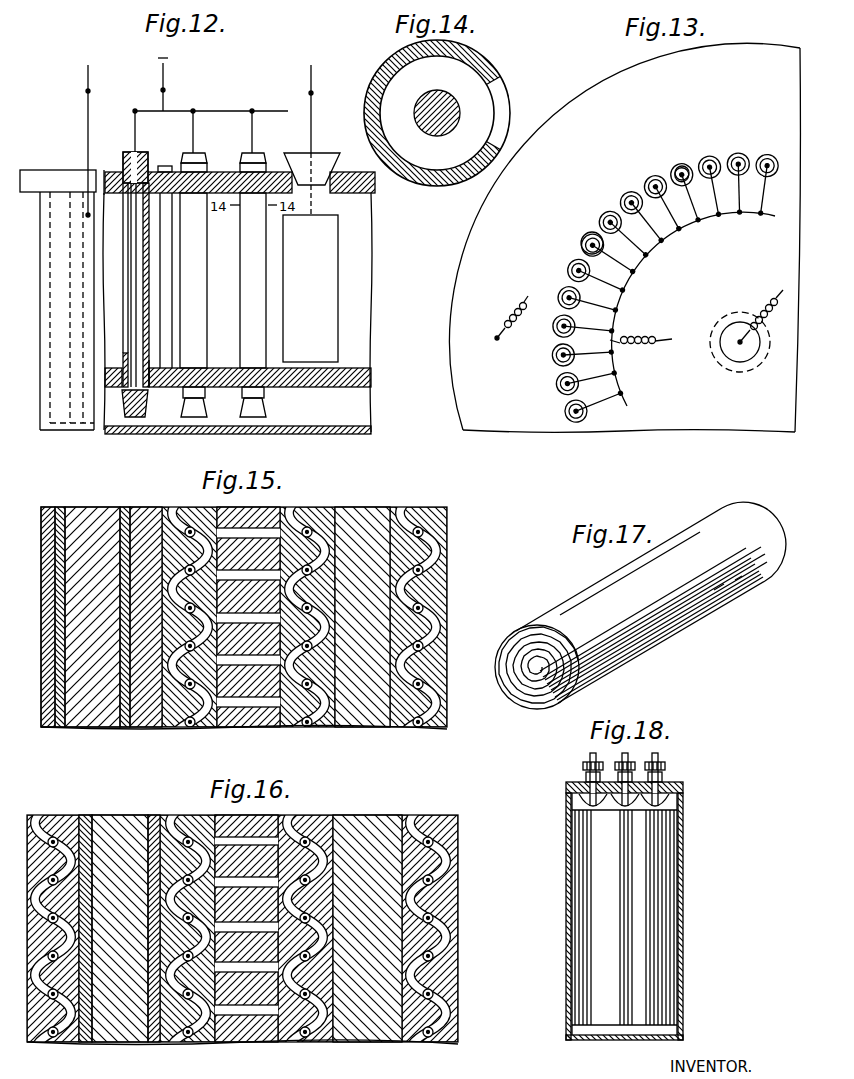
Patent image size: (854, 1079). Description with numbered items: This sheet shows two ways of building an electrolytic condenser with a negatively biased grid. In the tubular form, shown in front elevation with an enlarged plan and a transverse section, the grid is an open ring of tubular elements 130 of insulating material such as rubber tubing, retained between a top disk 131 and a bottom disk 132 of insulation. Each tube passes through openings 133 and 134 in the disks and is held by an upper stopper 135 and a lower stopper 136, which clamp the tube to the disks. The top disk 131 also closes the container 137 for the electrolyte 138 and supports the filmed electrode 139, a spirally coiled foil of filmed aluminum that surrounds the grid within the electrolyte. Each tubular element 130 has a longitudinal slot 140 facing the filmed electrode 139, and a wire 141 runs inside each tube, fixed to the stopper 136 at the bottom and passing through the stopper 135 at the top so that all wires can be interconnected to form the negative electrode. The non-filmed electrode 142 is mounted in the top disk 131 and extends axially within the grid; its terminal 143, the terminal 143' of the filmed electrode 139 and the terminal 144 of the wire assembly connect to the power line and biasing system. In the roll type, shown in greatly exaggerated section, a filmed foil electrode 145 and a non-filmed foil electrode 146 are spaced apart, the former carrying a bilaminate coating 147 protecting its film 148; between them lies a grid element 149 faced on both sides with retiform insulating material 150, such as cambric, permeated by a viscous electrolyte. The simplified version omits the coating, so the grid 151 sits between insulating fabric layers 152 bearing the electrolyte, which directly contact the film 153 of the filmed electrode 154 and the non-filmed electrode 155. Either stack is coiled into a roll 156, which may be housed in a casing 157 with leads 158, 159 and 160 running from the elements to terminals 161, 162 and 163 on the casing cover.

In FIG. 12, the tubular elements 130 is at (247, 296).
In FIG. 14, the tubular elements 130 is at (492, 67).
In FIG. 13, the tubular elements 130 is at (622, 195).
In FIG. 12, the top disk 131 is at (378, 193).
In FIG. 13, the top disk 131 is at (527, 420).
In FIG. 12, the bottom disk 132 is at (372, 380).
In FIG. 12, the openings of top disk 133 is at (105, 183).
In FIG. 13, the openings of top disk 133 is at (684, 165).
In FIG. 12, the openings of bottom disk 134 is at (152, 392).
In FIG. 12, the stopper 135 is at (140, 160).
In FIG. 13, the stopper 135 is at (583, 246).
In FIG. 12, the stopper 136 is at (137, 416).
In FIG. 12, the container 137 is at (350, 425).
In FIG. 12, the electrolyte 138 is at (358, 203).
In FIG. 12, the filmed electrode 139 is at (76, 403).
In FIG. 12, the longitudinal slot 140 is at (122, 303).
In FIG. 14, the longitudinal slot 140 is at (505, 116).
In FIG. 12, the wire 141 is at (135, 262).
In FIG. 14, the wire 141 is at (445, 127).
In FIG. 13, the wire 141 is at (637, 256).
In FIG. 12, the non-filmed electrode 142 is at (333, 312).
In FIG. 13, the non-filmed electrode 142 is at (748, 362).
In FIG. 12, the terminal of non-filmed electrode 143 is at (318, 140).
In FIG. 13, the terminal of non-filmed electrode 143 is at (737, 342).
In FIG. 12, the terminal of filmed electrode 143' is at (110, 141).
In FIG. 12, the terminal of wire assembly 144 is at (165, 90).
In FIG. 13, the terminal of wire assembly 144 is at (611, 340).
In FIG. 15, the filmed electrode 145 is at (97, 501).
In FIG. 17, the filmed electrode 145 is at (761, 550).
In FIG. 15, the non-filmed metal electrode 146 is at (358, 513).
In FIG. 17, the non-filmed metal electrode 146 is at (717, 591).
In FIG. 15, the bilaminate coating 147 is at (46, 728).
In FIG. 15, the film 148 is at (59, 508).
In FIG. 15, the grid element 149 is at (245, 726).
In FIG. 17, the grid element 149 is at (757, 575).
In FIG. 15, the retiform insulating material 150 is at (174, 729).
In FIG. 17, the retiform insulating material 150 is at (766, 556).
In FIG. 16, the grid 151 is at (250, 1037).
In FIG. 16, the insulating fabric layers 152 is at (48, 1041).
In FIG. 16, the film 153 is at (150, 1041).
In FIG. 16, the filmed electrode 154 is at (119, 1040).
In FIG. 16, the non-filmed electrode 155 is at (366, 1040).
In FIG. 17, the roll 156 is at (603, 583).
In FIG. 18, the roll 156 is at (655, 935).
In FIG. 18, the casing 157 is at (683, 884).
In FIG. 18, the lead 158 is at (606, 799).
In FIG. 18, the lead 159 is at (683, 800).
In FIG. 18, the lead 160 is at (680, 815).
In FIG. 18, the terminal 161 is at (584, 768).
In FIG. 18, the terminal 162 is at (636, 762).
In FIG. 18, the terminal 163 is at (666, 769).